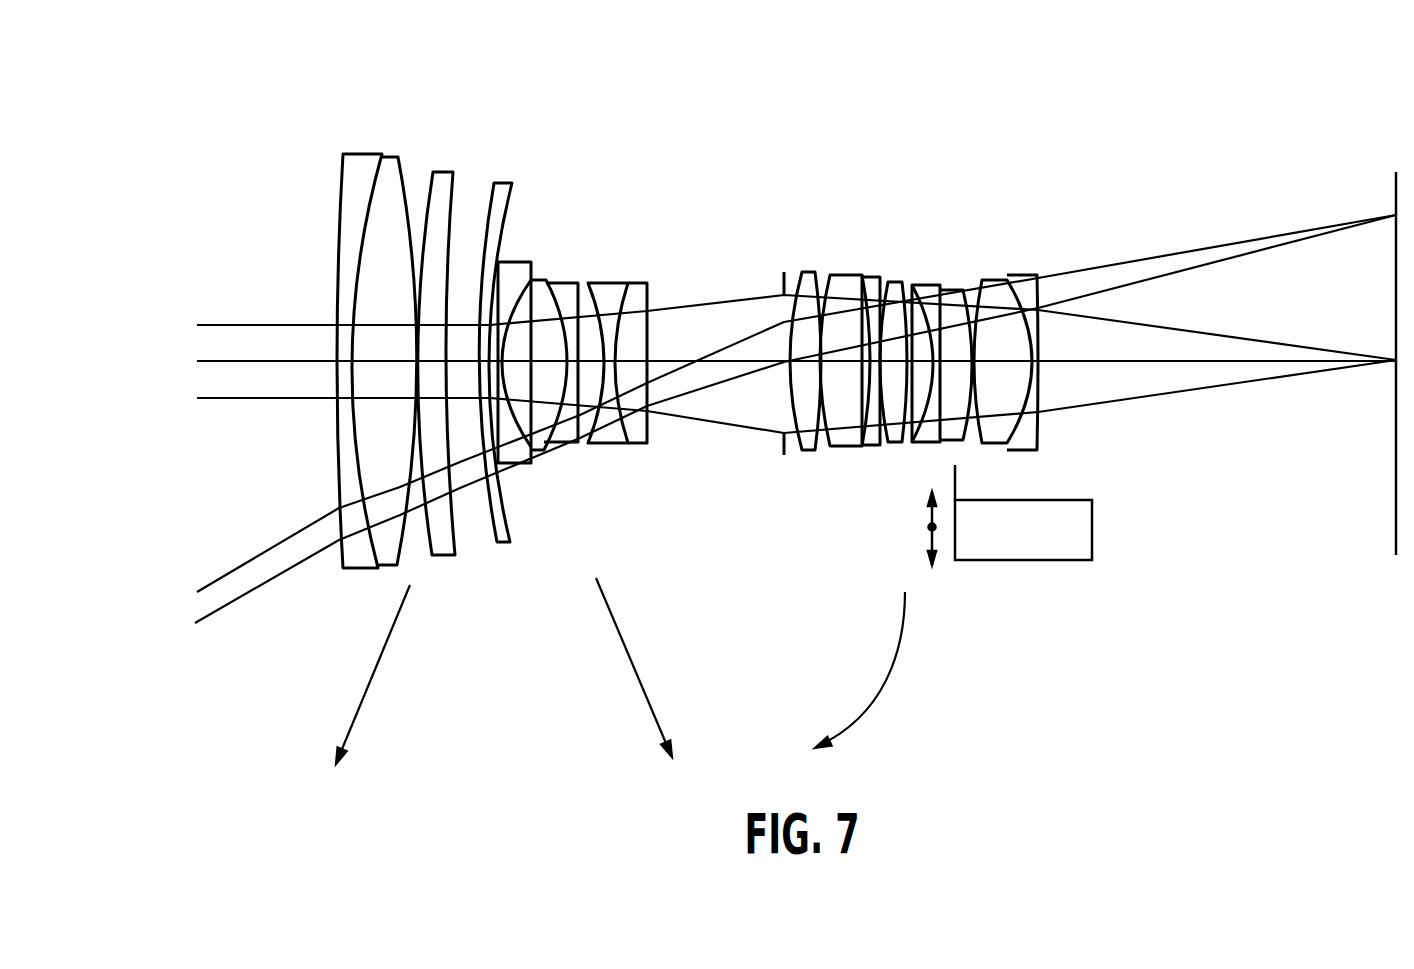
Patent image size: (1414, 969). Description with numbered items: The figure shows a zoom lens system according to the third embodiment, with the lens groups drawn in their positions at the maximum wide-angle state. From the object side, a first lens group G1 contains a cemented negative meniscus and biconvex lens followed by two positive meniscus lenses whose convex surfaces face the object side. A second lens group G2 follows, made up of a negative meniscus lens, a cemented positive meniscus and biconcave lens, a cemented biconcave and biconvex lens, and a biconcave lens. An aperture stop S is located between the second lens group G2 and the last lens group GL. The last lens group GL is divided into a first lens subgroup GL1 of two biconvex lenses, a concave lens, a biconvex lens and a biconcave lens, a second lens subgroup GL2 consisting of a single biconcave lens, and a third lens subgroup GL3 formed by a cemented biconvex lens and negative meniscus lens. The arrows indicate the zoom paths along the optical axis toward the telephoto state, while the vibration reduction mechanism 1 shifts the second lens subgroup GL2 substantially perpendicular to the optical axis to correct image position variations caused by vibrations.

The vibration reduction mechanism 1 is at (1093, 536).
The first lens group G1 is at (328, 120).
The second lens group G2 is at (510, 235).
The last lens group GL is at (951, 233).
The first lens subgroup GL1 is at (942, 255).
The second lens subgroup GL2 is at (952, 283).
The third lens subgroup GL3 is at (962, 265).
The aperture stop S is at (783, 283).